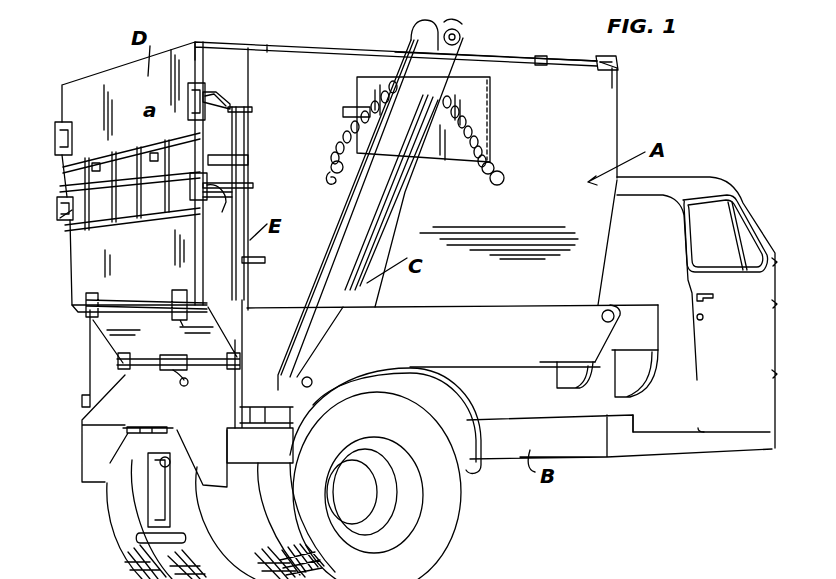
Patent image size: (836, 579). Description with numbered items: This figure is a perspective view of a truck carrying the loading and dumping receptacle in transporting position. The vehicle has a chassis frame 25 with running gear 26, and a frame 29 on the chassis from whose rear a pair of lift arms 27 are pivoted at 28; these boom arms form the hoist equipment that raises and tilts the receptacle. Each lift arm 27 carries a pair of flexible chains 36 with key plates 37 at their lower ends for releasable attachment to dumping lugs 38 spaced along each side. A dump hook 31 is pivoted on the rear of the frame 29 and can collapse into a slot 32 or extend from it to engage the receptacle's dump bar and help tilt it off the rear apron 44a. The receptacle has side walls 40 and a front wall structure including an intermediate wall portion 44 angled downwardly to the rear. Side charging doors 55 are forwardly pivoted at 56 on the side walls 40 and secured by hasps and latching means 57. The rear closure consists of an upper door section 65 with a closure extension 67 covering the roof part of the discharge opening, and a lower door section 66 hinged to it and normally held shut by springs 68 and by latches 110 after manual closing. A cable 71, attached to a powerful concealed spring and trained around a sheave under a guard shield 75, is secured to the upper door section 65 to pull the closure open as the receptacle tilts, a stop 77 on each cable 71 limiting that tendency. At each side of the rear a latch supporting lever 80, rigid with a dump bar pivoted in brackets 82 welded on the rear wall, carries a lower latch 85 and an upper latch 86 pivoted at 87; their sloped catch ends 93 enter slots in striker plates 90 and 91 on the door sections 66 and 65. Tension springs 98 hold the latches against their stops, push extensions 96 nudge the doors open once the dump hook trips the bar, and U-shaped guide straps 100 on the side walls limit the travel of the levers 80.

The chassis frame 25 is at (632, 448).
The running gear 26 is at (448, 510).
The lift arms 27 is at (402, 204).
The pivot 28 is at (311, 378).
The frame 29 is at (505, 354).
The dump hook 31 is at (180, 378).
The slot 32 is at (168, 395).
The flexible chains 36 is at (350, 135).
The key plates 37 is at (333, 164).
The dumping lugs 38 is at (326, 183).
The side walls 40 is at (612, 126).
The intermediate wall portion 44 is at (57, 205).
The rear apron 44a is at (203, 420).
The side charging doors 55 is at (470, 95).
The pivot 56 is at (493, 105).
The latching means 57 is at (342, 112).
The upper door section 65 is at (114, 81).
The lower door section 66 is at (83, 261).
The closure extension 67 is at (237, 44).
The spring 68 is at (127, 212).
The cable 71 is at (470, 60).
The guard shield 75 is at (612, 68).
The stop 77 is at (545, 60).
The latch supporting lever 80 is at (268, 262).
The brackets 82 is at (135, 362).
The lower latch 85 is at (232, 228).
The upper latch 86 is at (228, 174).
The pivot 87 is at (254, 108).
The striker plate 90 is at (60, 225).
The striker plate 91 is at (60, 122).
The catch ends 93 is at (51, 141).
The push extensions 96 is at (232, 103).
The tension springs 98 is at (252, 125).
The U-shaped guide straps 100 is at (250, 161).
The latches 110 is at (172, 305).